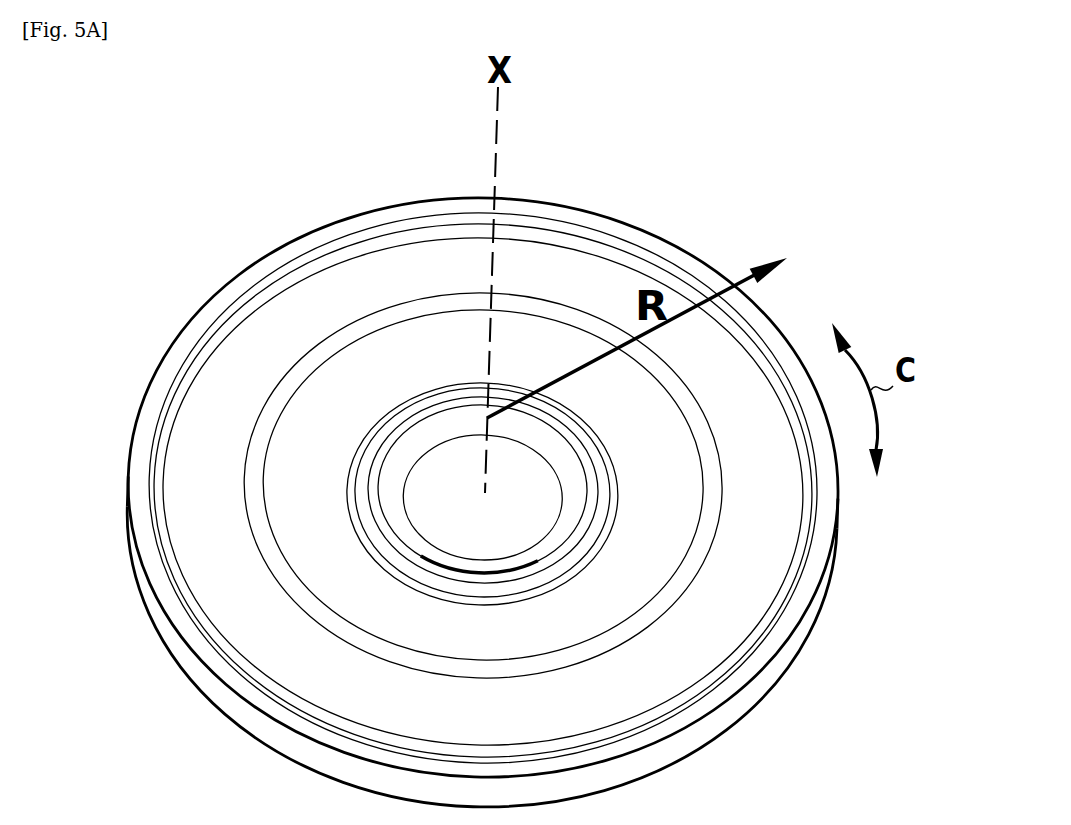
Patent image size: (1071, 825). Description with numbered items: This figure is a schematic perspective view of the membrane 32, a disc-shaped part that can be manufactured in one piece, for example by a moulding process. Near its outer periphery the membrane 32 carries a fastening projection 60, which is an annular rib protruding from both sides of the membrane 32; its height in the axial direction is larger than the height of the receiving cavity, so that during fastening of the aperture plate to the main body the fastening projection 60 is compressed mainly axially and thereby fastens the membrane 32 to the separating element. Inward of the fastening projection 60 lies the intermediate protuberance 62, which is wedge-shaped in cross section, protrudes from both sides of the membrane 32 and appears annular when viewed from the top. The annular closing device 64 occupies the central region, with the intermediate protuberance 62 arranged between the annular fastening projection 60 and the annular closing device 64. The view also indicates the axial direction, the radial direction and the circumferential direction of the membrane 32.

The membrane 32 is at (170, 331).
The fastening projection 60 is at (268, 264).
The intermediate protuberance 62 is at (243, 467).
The closing device 64 is at (335, 508).